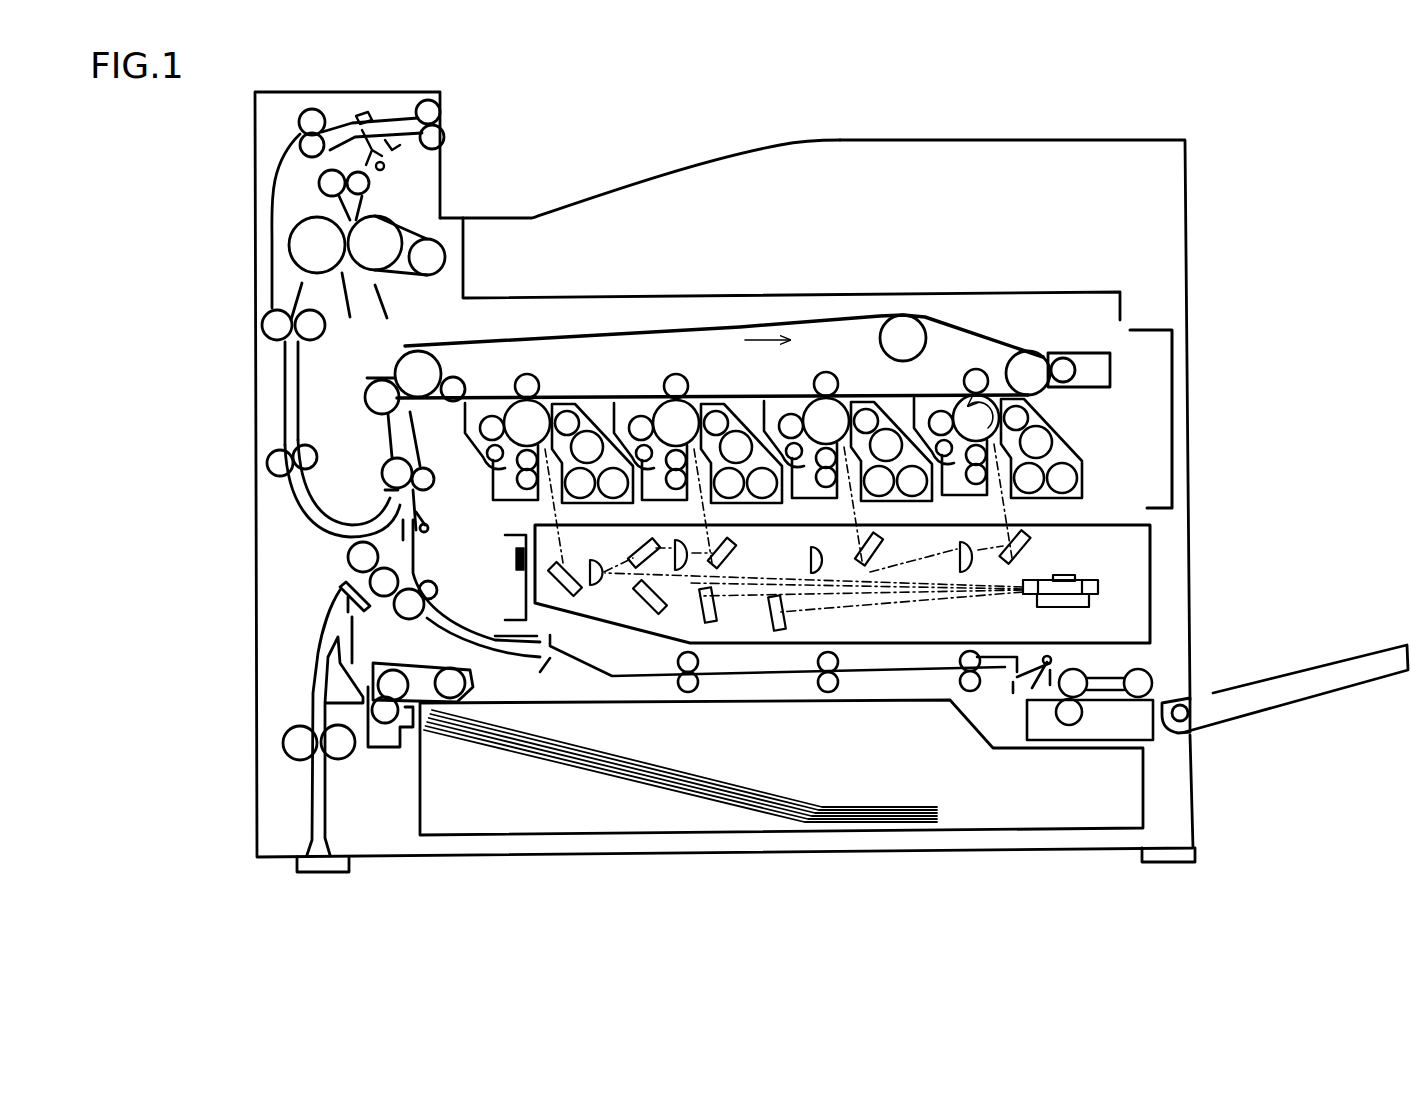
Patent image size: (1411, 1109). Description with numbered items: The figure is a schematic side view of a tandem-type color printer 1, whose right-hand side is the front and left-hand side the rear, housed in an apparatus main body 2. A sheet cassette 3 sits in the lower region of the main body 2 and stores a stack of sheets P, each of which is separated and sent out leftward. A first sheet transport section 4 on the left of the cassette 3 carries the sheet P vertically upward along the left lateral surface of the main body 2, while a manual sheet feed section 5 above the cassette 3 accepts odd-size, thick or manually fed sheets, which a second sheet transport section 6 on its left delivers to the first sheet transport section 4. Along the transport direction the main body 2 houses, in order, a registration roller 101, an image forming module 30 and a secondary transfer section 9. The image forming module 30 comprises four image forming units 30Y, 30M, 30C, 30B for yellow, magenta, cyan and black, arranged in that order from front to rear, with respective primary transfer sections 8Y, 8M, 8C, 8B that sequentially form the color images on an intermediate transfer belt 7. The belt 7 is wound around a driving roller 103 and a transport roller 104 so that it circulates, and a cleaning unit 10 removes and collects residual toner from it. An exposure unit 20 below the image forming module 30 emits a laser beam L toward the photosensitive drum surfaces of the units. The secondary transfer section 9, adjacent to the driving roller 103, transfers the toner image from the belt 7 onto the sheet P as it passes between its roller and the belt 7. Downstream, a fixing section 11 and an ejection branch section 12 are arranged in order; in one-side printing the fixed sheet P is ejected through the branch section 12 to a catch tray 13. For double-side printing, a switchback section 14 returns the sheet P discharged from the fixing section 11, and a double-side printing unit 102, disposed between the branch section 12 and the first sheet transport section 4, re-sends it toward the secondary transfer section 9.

The printer 1 is at (981, 104).
The apparatus main body 2 is at (1183, 136).
The sheet cassette 3 is at (589, 836).
The first sheet transport section 4 is at (336, 574).
The manual sheet feed section 5 is at (1321, 697).
The second sheet transport section 6 is at (888, 676).
The intermediate transfer belt 7 is at (596, 343).
The primary transfer section 8B is at (525, 349).
The primary transfer section 8C is at (673, 349).
The primary transfer section 8M is at (821, 348).
The primary transfer section 8Y is at (969, 346).
The secondary transfer section 9 is at (352, 385).
The cleaning unit 10 is at (1110, 367).
The fixing section 11 is at (314, 208).
The ejection branch section 12 is at (374, 122).
The catch tray 13 is at (569, 198).
The switchback section 14 is at (451, 100).
The exposure unit 20 is at (1152, 578).
The image forming module 30 is at (1152, 481).
The image forming unit 30B is at (482, 504).
The image forming unit 30C is at (743, 410).
The image forming unit 30M is at (893, 409).
The image forming unit 30Y is at (1068, 424).
The registration roller 101 is at (378, 474).
The double-side printing unit 102 is at (323, 405).
The driving roller 103 is at (416, 362).
The transport roller 104 is at (1037, 363).
The laser beam L is at (942, 603).
The sheet P is at (675, 779).